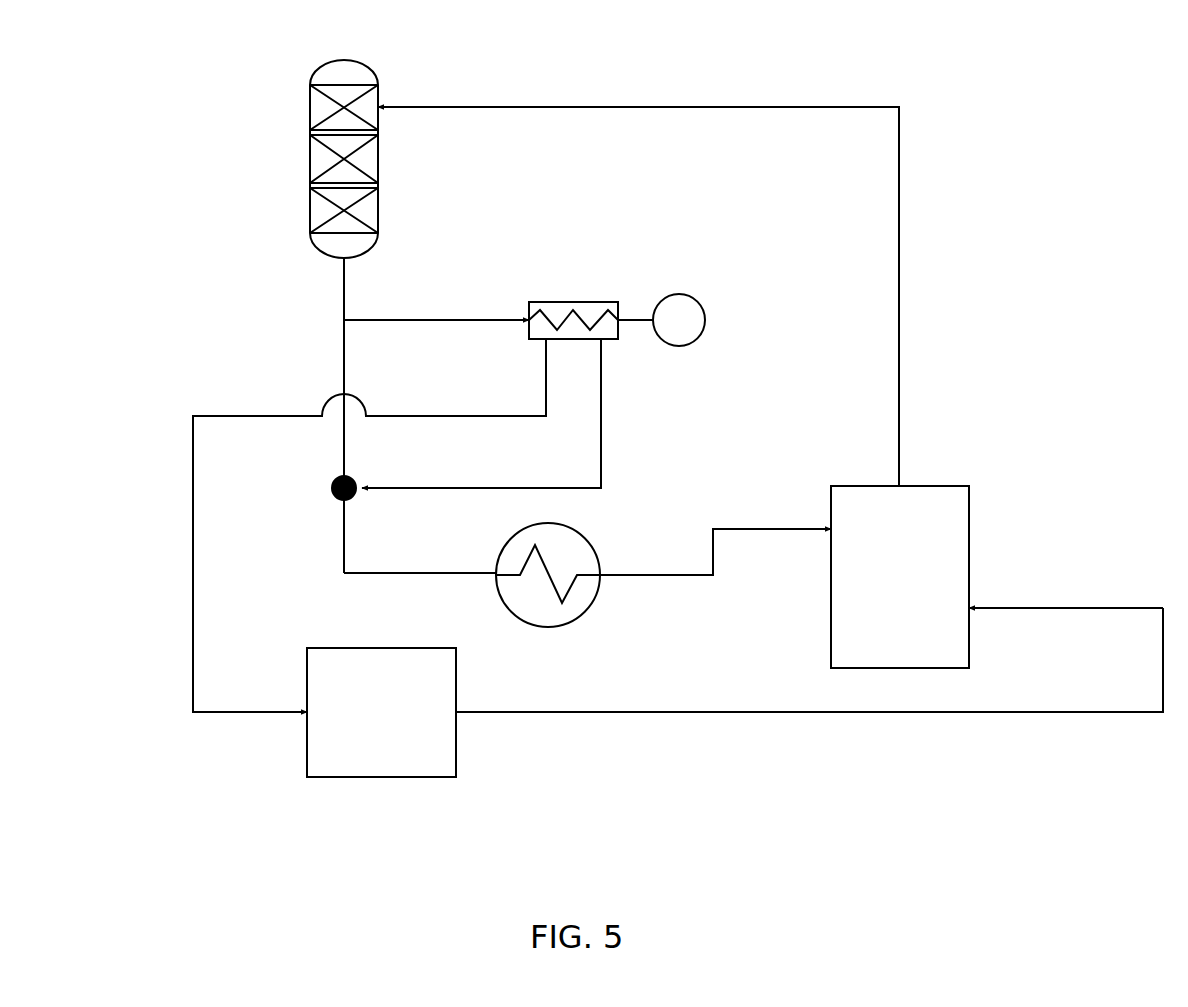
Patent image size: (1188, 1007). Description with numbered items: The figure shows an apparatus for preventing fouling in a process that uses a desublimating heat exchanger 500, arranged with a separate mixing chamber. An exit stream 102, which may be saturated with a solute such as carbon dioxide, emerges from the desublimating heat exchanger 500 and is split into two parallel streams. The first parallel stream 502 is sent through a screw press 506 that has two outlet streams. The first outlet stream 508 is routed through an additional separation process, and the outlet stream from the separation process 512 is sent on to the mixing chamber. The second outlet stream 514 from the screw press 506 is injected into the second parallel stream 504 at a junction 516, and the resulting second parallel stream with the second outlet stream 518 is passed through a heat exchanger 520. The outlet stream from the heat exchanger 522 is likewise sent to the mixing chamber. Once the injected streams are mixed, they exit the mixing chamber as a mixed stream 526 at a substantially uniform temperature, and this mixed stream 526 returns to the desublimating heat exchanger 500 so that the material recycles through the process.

The desublimating heat exchanger 500 is at (322, 64).
The exit stream 102 is at (343, 283).
The second parallel stream 504 is at (343, 368).
The first parallel stream 502 is at (435, 318).
The screw press 506 is at (591, 300).
The first outlet stream 508 is at (421, 417).
The second outlet stream 514 is at (603, 425).
The junction 516 is at (330, 490).
The second parallel stream with the second outlet stream 518 is at (378, 570).
The heat exchanger 520 is at (597, 590).
The outlet stream from the heat exchanger 522 is at (773, 529).
The mixed stream 526 is at (654, 107).
The outlet stream from the separation process 512 is at (567, 713).